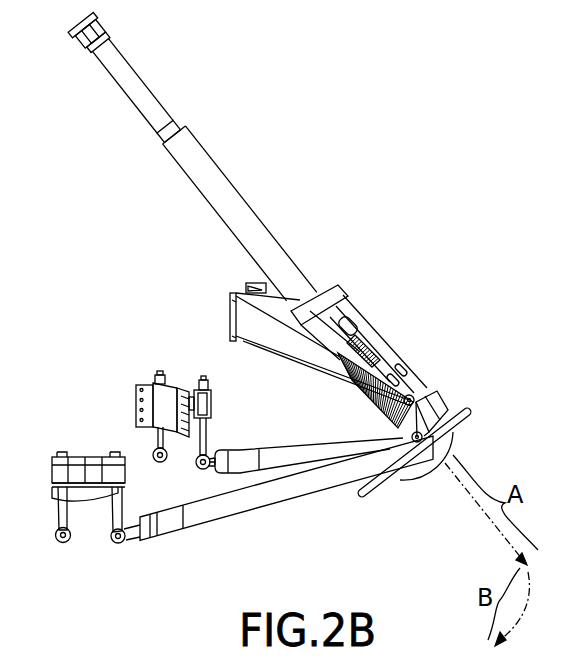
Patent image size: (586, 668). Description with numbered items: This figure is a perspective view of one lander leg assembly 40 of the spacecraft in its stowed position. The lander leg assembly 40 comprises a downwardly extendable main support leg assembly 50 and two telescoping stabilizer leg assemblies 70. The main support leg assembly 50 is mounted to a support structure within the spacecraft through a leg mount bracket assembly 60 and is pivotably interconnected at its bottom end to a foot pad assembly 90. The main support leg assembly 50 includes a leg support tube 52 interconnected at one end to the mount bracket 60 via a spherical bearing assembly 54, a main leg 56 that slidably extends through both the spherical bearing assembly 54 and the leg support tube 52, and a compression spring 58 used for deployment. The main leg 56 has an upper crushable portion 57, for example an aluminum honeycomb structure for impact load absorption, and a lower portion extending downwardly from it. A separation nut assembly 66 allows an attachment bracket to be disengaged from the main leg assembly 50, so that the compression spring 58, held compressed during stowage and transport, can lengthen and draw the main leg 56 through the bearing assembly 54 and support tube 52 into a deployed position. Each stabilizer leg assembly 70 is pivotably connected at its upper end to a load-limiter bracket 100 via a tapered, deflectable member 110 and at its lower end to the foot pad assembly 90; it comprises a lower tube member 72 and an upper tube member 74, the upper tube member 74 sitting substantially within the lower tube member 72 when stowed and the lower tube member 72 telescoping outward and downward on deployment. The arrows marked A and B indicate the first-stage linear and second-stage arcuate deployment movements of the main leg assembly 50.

The lander leg assembly 40 is at (336, 153).
The main support leg assembly 50 is at (174, 204).
The leg support tube 52 is at (363, 303).
The spherical bearing assembly 54 is at (327, 290).
The main leg 56 is at (190, 133).
The upper crushable portion 57 is at (150, 138).
The compression spring 58 is at (360, 412).
The leg mount bracket assembly 60 is at (228, 305).
The separation nut assembly 66 is at (430, 377).
The stabilizer leg assembly 70 is at (293, 470).
The lower tube member 72 is at (222, 507).
The upper tube member 74 is at (140, 530).
The foot pad assembly 90 is at (420, 478).
The load-limiter bracket 100 is at (85, 494).
The tapered, deflectable member 110 is at (112, 512).